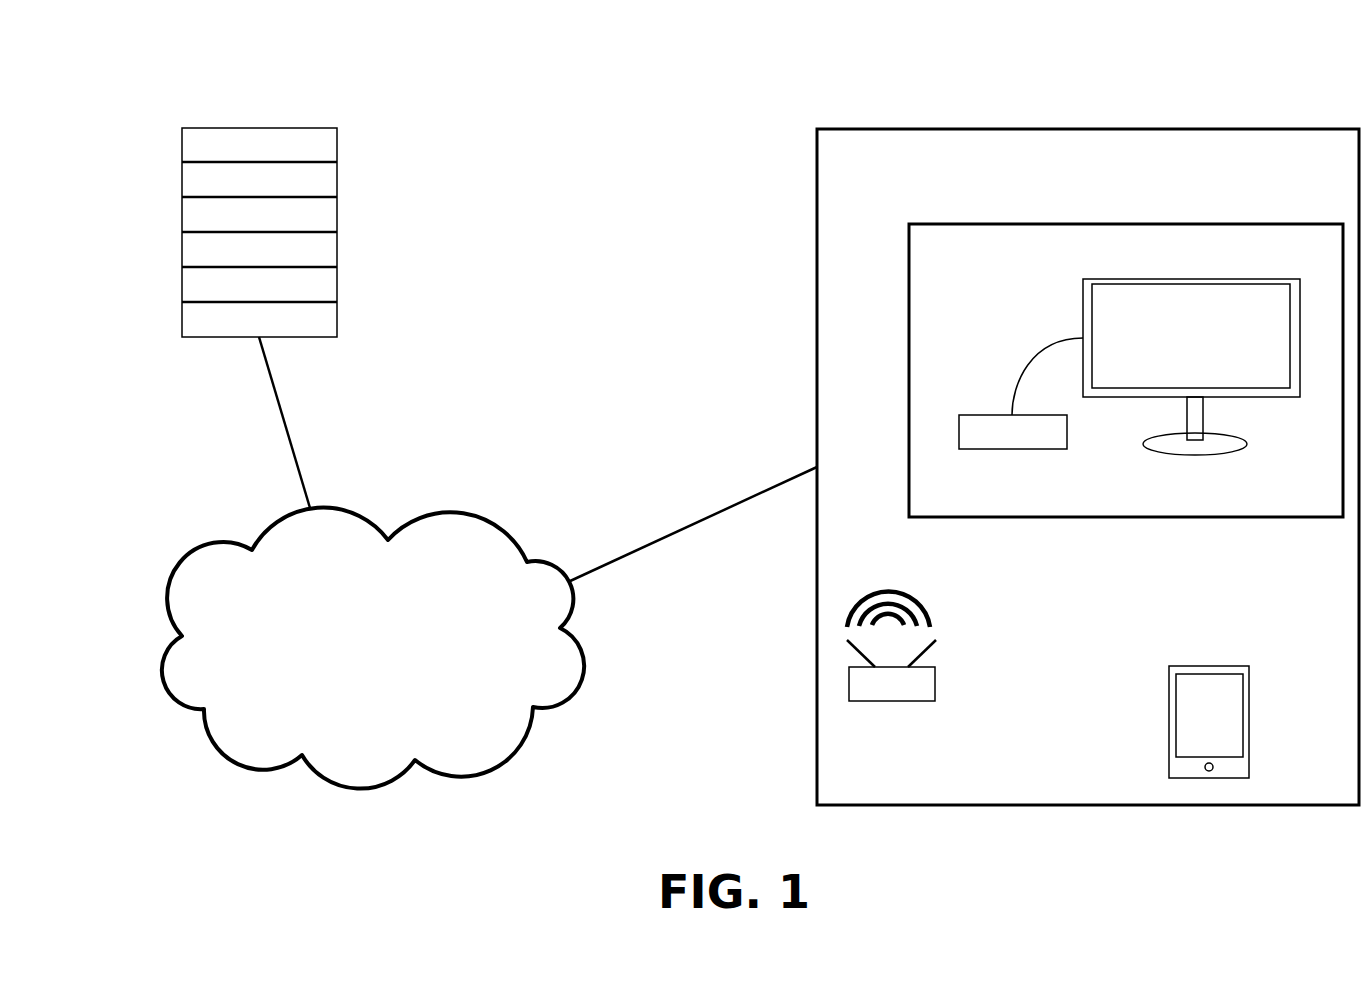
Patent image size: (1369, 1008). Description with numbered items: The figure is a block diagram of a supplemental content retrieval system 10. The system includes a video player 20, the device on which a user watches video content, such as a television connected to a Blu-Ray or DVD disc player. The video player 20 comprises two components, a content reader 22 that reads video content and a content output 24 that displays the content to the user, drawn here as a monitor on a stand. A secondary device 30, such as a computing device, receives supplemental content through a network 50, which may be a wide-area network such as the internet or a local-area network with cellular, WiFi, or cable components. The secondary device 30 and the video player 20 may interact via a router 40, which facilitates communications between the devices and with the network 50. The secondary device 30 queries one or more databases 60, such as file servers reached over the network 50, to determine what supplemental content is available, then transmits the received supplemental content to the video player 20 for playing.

The supplemental content retrieval system 10 is at (1216, 60).
The video player 20 is at (1123, 222).
The content reader 22 is at (1021, 393).
The content output 24 is at (1191, 367).
The secondary device 30 is at (1209, 722).
The router 40 is at (891, 646).
The network 50 is at (373, 648).
The databases 60 is at (259, 232).